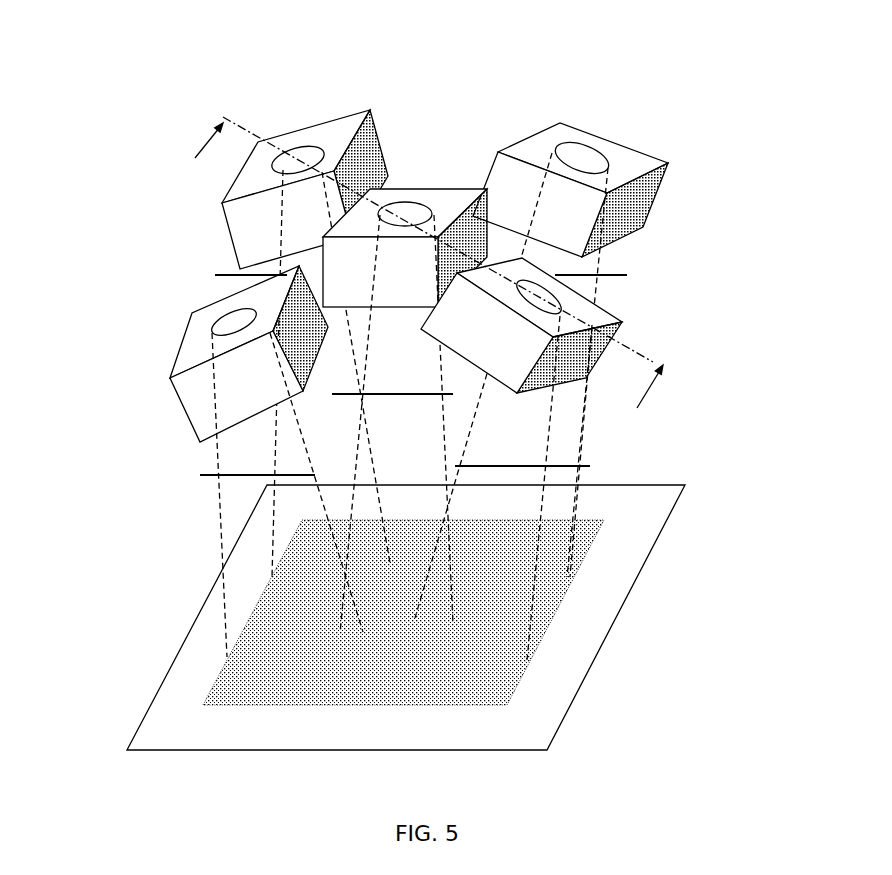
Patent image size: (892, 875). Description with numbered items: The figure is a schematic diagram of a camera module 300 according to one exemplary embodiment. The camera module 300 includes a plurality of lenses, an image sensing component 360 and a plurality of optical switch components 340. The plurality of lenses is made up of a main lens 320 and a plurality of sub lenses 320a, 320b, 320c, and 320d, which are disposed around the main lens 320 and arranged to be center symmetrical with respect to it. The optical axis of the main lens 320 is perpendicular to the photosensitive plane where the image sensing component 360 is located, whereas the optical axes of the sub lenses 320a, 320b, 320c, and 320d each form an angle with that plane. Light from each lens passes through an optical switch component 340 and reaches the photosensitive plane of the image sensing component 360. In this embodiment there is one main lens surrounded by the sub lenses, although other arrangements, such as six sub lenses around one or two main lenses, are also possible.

The camera module 300 is at (430, 26).
The main lens 320 is at (402, 187).
The sub lens 320a is at (235, 184).
The sub lens 320b is at (488, 375).
The sub lens 320c is at (655, 205).
The sub lens 320d is at (265, 410).
The optical switch component 340 is at (200, 474).
The image sensing component 360 is at (593, 667).